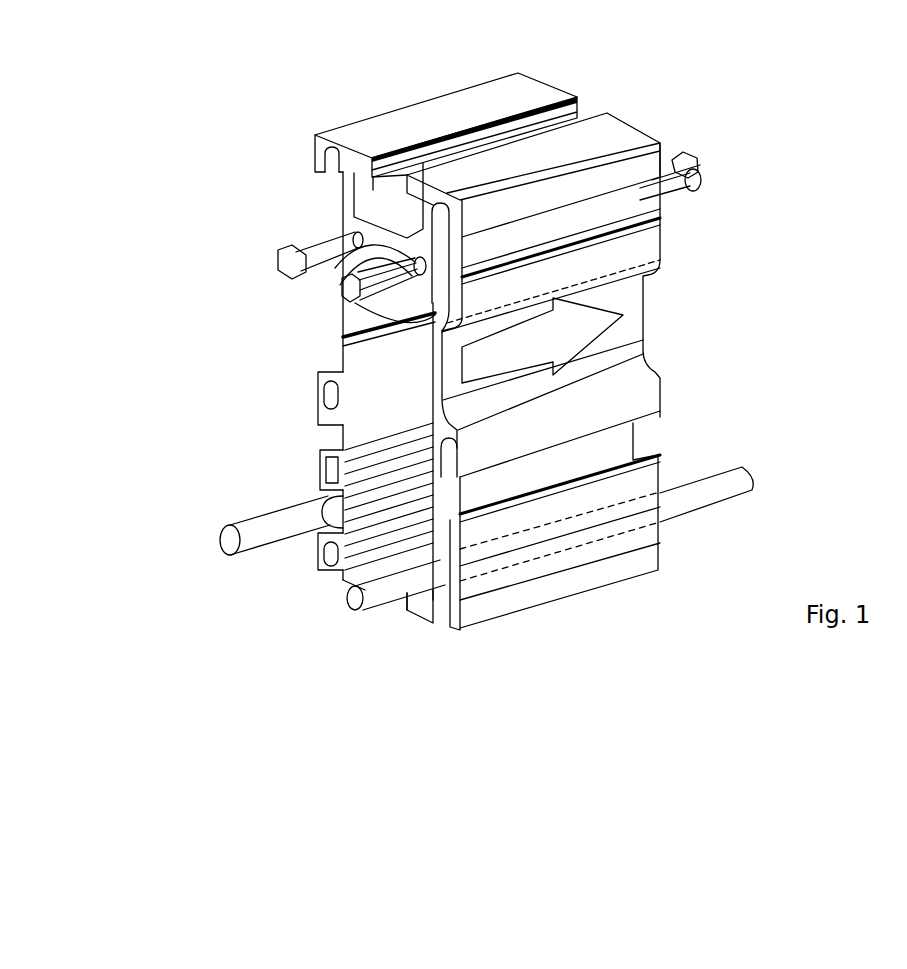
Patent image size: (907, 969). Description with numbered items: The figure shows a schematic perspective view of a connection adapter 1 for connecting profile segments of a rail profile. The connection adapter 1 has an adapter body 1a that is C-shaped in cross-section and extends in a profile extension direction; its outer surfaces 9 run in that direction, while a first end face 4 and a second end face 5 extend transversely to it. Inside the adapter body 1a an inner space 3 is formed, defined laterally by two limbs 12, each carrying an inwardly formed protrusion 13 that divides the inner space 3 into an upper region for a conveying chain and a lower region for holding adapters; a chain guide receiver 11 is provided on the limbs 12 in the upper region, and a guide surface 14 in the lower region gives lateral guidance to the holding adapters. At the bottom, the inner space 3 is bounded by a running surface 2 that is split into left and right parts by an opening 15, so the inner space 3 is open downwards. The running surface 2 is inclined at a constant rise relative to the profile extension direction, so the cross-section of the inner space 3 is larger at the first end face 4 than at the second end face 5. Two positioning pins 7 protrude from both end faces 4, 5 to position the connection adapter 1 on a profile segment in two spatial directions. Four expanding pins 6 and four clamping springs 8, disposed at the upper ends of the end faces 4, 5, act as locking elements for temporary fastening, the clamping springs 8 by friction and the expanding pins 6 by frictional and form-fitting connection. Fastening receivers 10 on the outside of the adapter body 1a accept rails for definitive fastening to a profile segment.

The connection adapter 1 is at (205, 140).
The adapter body 1a is at (485, 100).
The running surface 2 is at (347, 583).
The inner space 3 is at (418, 423).
The first end face 4 is at (352, 221).
The second end face 5 is at (652, 298).
The expanding pin 6 is at (287, 257).
The positioning pin 7 is at (250, 537).
The clamping spring 8 is at (297, 277).
The outer surface 9 is at (400, 127).
The fastening receiver 10 is at (532, 126).
The chain guide receiver 11 is at (358, 330).
The limb 12 is at (345, 375).
The protrusion 13 is at (363, 470).
The guide surface 14 is at (330, 518).
The opening 15 is at (400, 608).